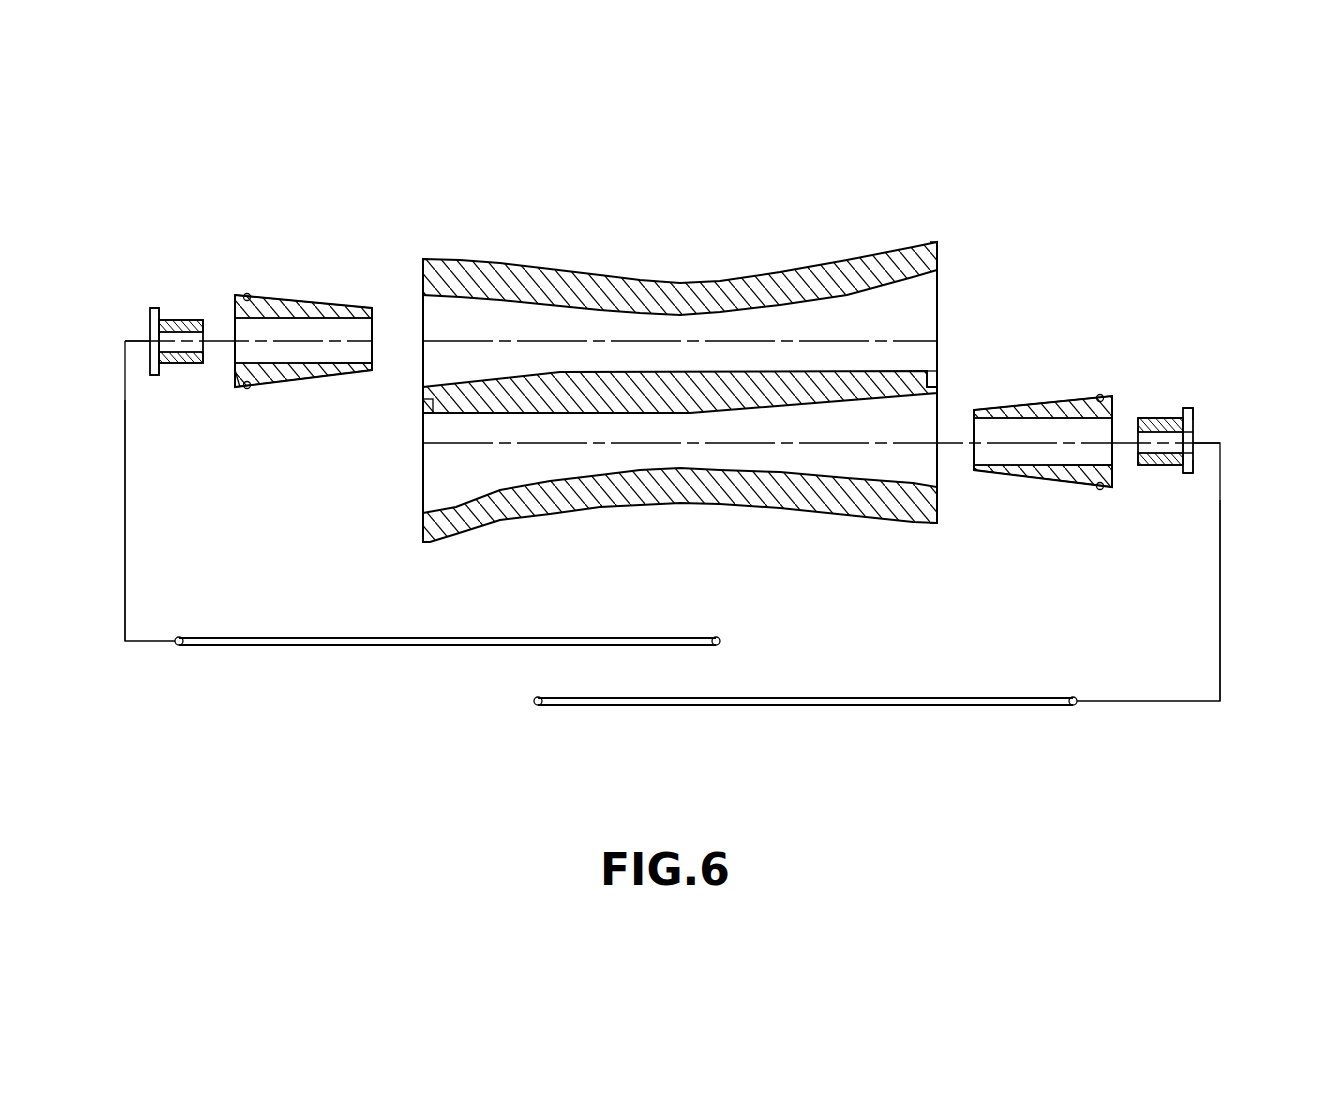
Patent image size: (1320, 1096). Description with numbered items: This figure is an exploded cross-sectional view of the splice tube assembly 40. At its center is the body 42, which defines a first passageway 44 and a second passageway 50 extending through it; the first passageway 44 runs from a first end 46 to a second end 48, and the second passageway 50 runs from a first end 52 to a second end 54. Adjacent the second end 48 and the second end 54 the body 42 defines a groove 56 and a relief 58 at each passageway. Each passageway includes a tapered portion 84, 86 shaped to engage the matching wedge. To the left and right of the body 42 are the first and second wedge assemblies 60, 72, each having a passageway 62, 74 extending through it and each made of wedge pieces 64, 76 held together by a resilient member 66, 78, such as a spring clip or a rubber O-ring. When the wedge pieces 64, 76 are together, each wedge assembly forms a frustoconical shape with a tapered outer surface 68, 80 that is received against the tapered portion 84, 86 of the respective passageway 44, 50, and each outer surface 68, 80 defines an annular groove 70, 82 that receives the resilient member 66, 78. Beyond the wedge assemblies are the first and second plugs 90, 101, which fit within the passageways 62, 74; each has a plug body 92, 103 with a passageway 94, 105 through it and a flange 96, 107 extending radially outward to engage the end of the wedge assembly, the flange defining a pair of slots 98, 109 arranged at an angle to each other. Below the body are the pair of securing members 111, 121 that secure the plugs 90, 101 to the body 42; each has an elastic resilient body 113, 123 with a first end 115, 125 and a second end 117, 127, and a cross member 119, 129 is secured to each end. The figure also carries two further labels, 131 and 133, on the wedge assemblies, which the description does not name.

The splice tube assembly 40 is at (610, 208).
The body 42 is at (754, 290).
The first passageway 44 is at (832, 323).
The first end of the first passageway 46 is at (423, 262).
The second end of the first passageway 48 is at (940, 285).
The second passageway 50 is at (815, 456).
The first end of the second passageway 52 is at (940, 480).
The second end of the second passageway 54 is at (423, 470).
The groove 56 is at (935, 380).
The relief 58 is at (938, 268).
The first wedge assembly 60 is at (280, 300).
The passageway of the first wedge assembly 62 is at (325, 328).
The wedge pieces 64 is at (232, 375).
The resilient member 66 is at (246, 294).
The tapered outer surface 68 is at (356, 306).
The annular groove 70 is at (235, 310).
The second wedge assembly 72 is at (1068, 400).
The passageway of the second wedge assembly 74 is at (1053, 462).
The wedge pieces 76 is at (1010, 473).
The resilient member 78 is at (1101, 394).
The tapered outer surface 80 is at (1033, 407).
The annular groove 82 is at (1101, 490).
The tapered portion 84 is at (518, 300).
The tapered portion 86 is at (887, 480).
The first plug 90 is at (156, 320).
The plug body 92 is at (180, 360).
The passageway 94 is at (150, 364).
The flange 96 is at (150, 323).
The slots 98 is at (150, 341).
The second plug 101 is at (1186, 410).
The plug body 103 is at (1160, 420).
The passageway 105 is at (1193, 466).
The flange 107 is at (1195, 420).
The slots 109 is at (1193, 443).
The securing member 111 is at (420, 645).
The resilient body 113 is at (302, 645).
The first end 115 is at (181, 646).
The second end 117 is at (714, 634).
The cross member 119 is at (722, 638).
The securing member 121 is at (876, 708).
The resilient body 123 is at (783, 708).
The first end 125 is at (1071, 706).
The second end 127 is at (556, 706).
The cross member 129 is at (534, 701).
The end cap bore 131 is at (305, 358).
The end cap bore 133 is at (1115, 455).